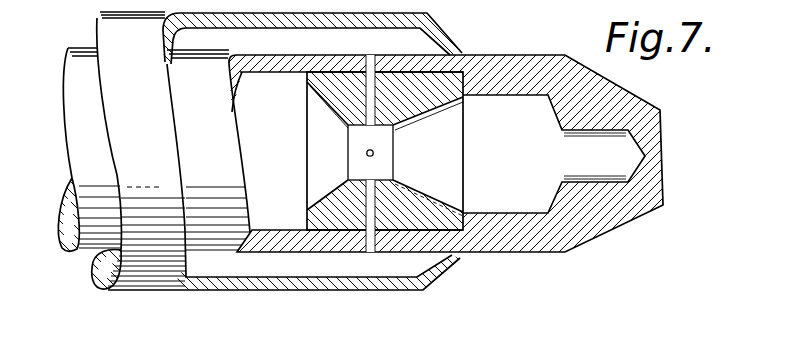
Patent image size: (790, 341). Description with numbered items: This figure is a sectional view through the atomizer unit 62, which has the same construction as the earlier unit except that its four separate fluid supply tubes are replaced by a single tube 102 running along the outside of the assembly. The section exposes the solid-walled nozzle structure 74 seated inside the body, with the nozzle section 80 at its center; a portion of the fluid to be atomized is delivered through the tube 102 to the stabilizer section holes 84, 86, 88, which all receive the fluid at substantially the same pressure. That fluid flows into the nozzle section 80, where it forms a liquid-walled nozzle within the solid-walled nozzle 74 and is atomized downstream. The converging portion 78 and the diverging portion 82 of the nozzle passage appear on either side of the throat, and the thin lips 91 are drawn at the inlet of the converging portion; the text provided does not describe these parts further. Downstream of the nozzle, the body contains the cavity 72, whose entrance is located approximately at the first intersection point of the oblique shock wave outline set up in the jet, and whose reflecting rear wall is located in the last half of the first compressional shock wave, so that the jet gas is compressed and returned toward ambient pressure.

The atomizer unit 62 is at (128, 293).
The tube 102 is at (335, 288).
The nozzle structure 74 is at (307, 77).
The converging inlet section 78 is at (336, 147).
The diverging outlet section 82 is at (441, 147).
The nozzle section 80 is at (372, 168).
The stabilizer section hole 86 is at (366, 153).
The stabilizer section hole 84 is at (373, 54).
The stabilizer section hole 88 is at (368, 250).
The lip 91 is at (312, 105).
The cavity 72 is at (604, 161).